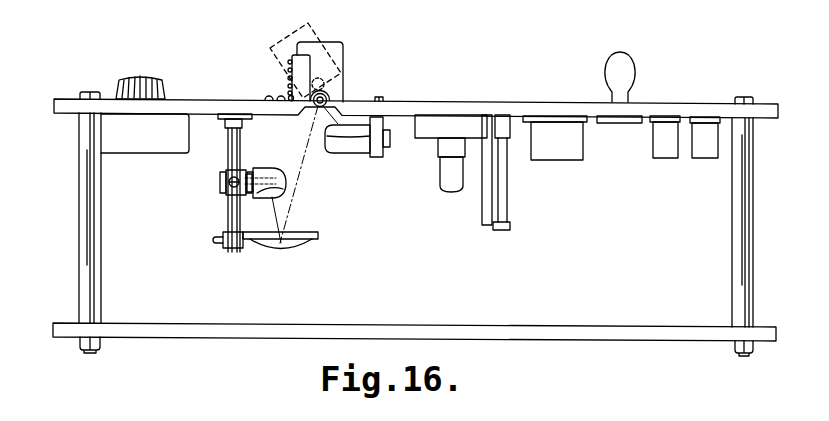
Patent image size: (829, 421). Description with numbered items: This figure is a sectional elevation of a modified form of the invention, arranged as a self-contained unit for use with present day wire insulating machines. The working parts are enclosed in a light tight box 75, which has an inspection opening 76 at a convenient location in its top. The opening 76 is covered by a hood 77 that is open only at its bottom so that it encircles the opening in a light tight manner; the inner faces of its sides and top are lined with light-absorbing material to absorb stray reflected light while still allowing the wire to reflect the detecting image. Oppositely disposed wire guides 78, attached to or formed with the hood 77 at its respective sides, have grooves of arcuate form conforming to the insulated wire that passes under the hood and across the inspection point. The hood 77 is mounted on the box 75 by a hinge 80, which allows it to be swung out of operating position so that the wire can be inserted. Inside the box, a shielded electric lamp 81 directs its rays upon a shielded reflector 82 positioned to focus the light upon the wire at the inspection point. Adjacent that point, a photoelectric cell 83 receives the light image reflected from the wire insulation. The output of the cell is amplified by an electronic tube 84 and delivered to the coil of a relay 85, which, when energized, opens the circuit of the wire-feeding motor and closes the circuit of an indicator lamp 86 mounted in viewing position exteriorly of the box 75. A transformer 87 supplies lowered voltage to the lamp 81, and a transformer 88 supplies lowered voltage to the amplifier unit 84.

The light tight box 75 is at (207, 337).
The inspection opening 76 is at (312, 108).
The hood 77 is at (344, 50).
The wire guides 78 is at (329, 96).
The hinge 80 is at (290, 66).
The electric lamp 81 is at (265, 168).
The shielded reflector 82 is at (297, 242).
The photoelectric cell 83 is at (351, 154).
The electronic tube 84 is at (439, 175).
The relay 85 is at (561, 161).
The indicator lamp 86 is at (624, 72).
The transformer 87 is at (659, 158).
The transformer 88 is at (705, 159).